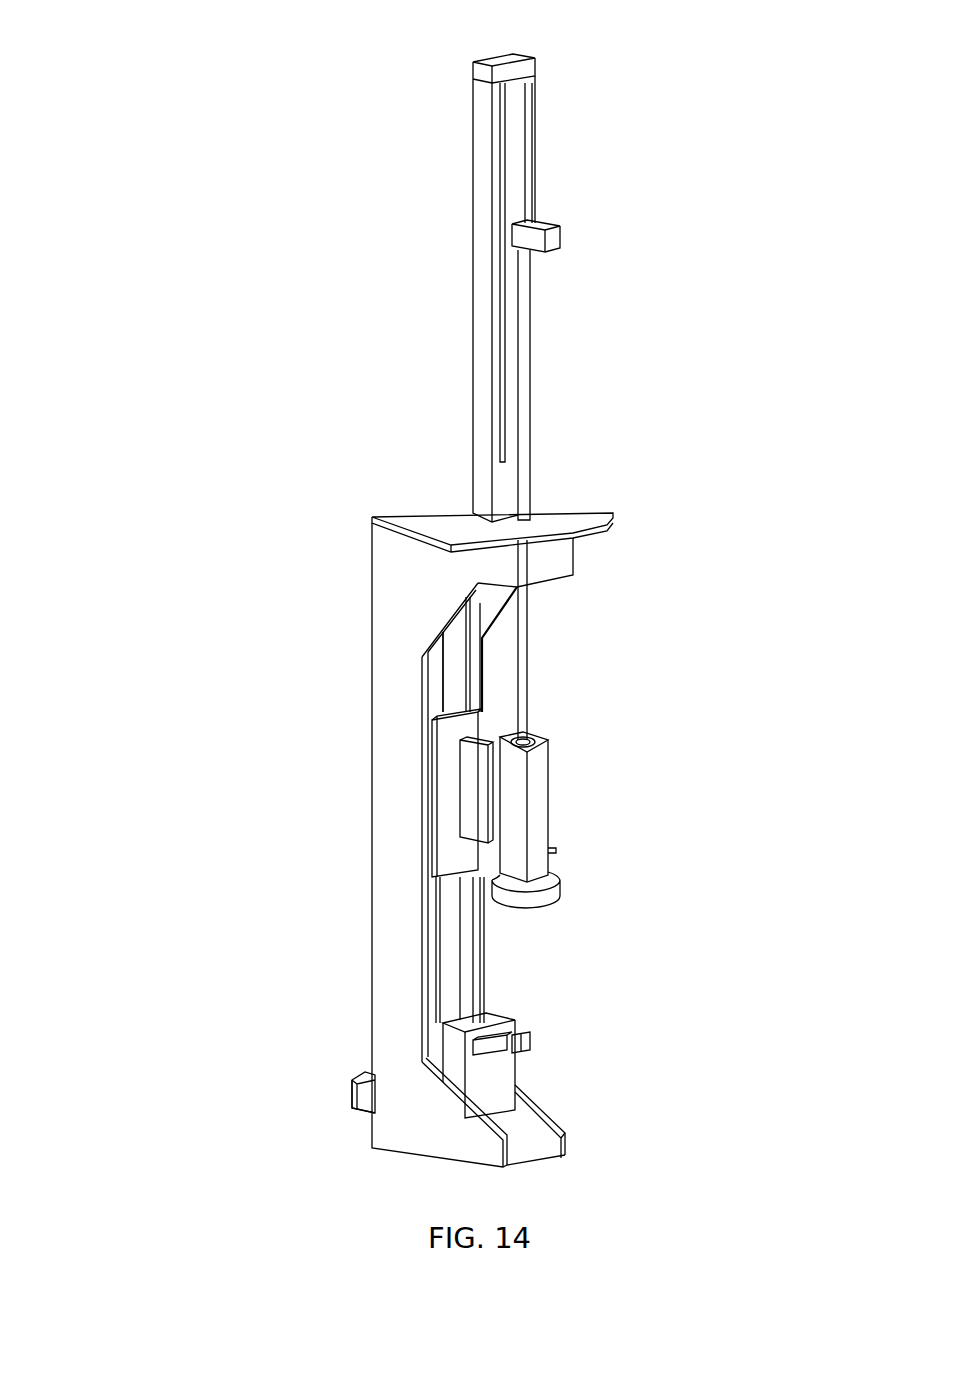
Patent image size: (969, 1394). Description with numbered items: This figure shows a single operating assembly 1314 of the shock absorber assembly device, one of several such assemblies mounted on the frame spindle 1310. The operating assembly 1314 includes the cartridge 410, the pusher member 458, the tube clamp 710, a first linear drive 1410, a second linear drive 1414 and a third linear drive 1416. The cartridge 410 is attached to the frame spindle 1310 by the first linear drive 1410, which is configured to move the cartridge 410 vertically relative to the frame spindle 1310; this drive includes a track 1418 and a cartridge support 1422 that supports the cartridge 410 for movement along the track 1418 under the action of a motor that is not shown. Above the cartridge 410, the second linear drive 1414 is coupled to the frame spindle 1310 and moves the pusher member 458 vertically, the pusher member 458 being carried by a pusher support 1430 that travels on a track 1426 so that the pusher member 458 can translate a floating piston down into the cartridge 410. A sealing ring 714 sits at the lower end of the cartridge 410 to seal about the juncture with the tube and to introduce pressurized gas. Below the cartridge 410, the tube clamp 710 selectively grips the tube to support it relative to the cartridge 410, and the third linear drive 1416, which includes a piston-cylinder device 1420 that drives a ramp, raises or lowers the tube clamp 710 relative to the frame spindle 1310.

The operating assembly 1314 is at (207, 530).
The second linear drive 1414 is at (473, 287).
The track 1426 is at (525, 118).
The pusher support 1430 is at (545, 225).
The first linear drive 1410 is at (418, 833).
The track 1418 is at (447, 680).
The cartridge support 1422 is at (447, 745).
The pusher member 458 is at (527, 650).
The cartridge 410 is at (537, 807).
The sealing ring 714 is at (562, 892).
The tube clamp 710 is at (528, 1037).
The frame spindle 1310 is at (527, 1155).
The third linear drive 1416 is at (358, 1070).
The piston-cylinder device 1420 is at (353, 1094).